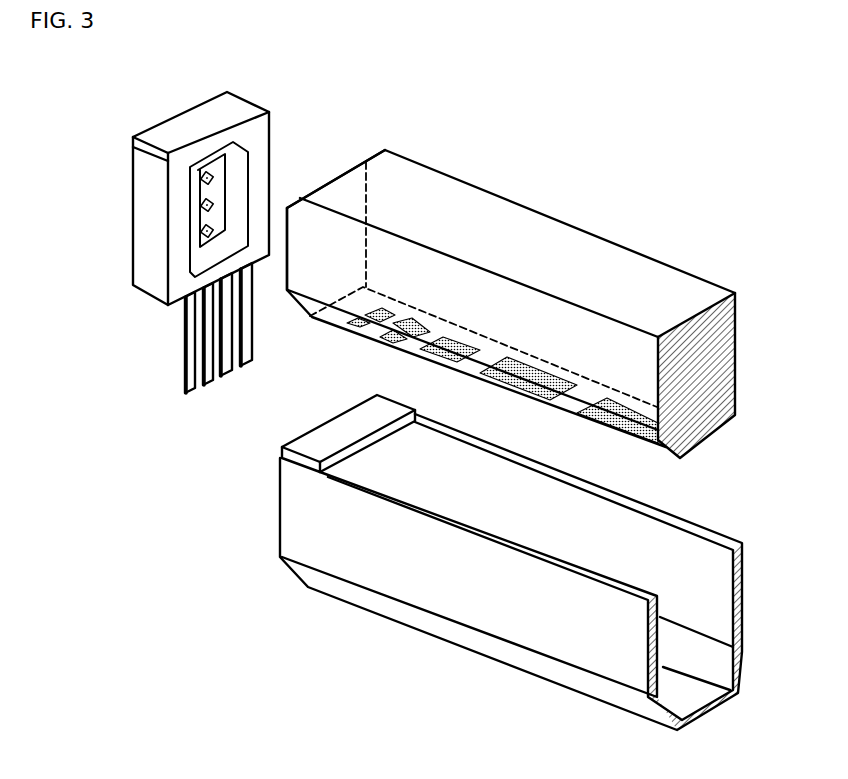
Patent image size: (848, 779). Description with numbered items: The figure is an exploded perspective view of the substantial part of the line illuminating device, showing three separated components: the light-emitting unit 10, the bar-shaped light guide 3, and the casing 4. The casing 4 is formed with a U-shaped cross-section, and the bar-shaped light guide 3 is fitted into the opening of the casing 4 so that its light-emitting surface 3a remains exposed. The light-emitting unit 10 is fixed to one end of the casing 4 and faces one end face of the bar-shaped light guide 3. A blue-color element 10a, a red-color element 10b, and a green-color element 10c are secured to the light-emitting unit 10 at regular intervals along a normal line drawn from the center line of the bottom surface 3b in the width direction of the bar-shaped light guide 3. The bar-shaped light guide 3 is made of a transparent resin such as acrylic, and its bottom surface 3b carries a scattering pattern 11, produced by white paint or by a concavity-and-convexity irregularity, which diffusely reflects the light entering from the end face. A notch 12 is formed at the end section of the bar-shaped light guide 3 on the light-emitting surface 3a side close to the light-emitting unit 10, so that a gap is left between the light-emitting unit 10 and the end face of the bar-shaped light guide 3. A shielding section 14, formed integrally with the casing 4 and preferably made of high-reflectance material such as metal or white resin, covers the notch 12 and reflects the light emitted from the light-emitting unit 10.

The light-emitting unit 10 is at (164, 218).
The blue-color element 10a is at (203, 180).
The red-color element 10b is at (202, 210).
The green-color element 10c is at (203, 237).
The notch 12 is at (295, 203).
The bar-shaped light guide 3 is at (530, 313).
The light-emitting surface 3a is at (590, 247).
The bottom surface 3b is at (702, 449).
The scattering pattern 11 is at (513, 383).
The shielding section 14 is at (337, 437).
The casing 4 is at (511, 555).